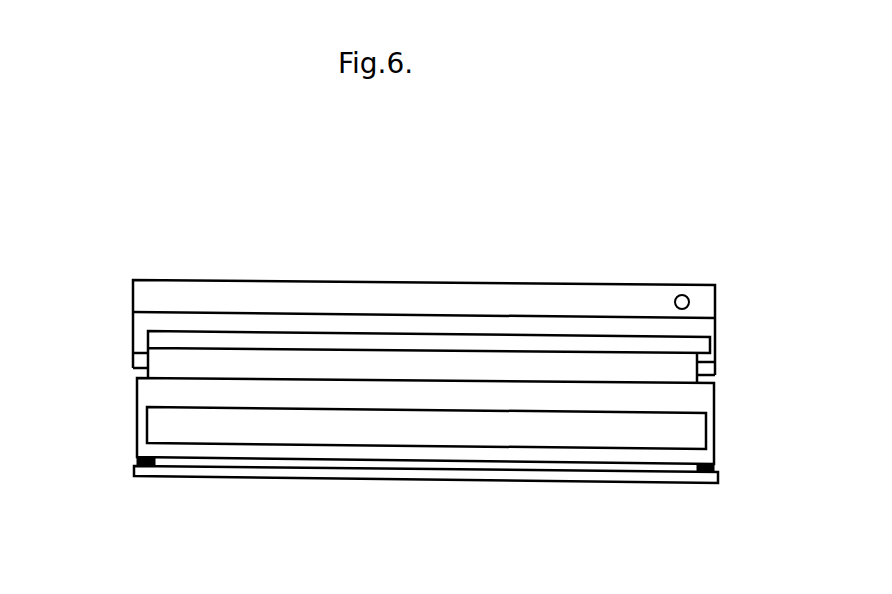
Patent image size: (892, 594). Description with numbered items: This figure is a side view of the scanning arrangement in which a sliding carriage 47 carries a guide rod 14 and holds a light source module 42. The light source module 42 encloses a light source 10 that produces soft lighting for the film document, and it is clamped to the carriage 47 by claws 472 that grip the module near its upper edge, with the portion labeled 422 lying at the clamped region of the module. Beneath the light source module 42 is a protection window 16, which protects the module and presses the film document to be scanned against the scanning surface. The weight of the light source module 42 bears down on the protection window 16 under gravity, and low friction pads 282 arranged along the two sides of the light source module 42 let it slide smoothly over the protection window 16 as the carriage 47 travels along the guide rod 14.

The light source 10 is at (678, 432).
The guide rod 14 is at (677, 290).
The protection window 16 is at (153, 477).
The light source module 42 is at (157, 398).
The sliding carriage 47 is at (498, 298).
The low friction pads 282 is at (717, 469).
The slot 422 is at (165, 353).
The claws 472 is at (140, 338).